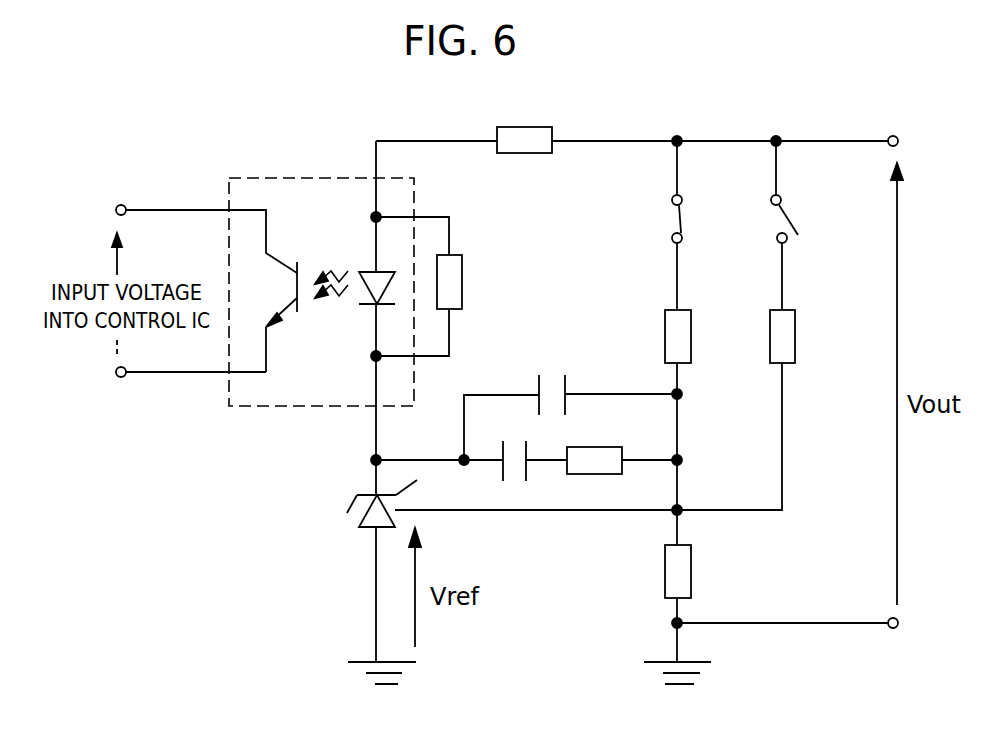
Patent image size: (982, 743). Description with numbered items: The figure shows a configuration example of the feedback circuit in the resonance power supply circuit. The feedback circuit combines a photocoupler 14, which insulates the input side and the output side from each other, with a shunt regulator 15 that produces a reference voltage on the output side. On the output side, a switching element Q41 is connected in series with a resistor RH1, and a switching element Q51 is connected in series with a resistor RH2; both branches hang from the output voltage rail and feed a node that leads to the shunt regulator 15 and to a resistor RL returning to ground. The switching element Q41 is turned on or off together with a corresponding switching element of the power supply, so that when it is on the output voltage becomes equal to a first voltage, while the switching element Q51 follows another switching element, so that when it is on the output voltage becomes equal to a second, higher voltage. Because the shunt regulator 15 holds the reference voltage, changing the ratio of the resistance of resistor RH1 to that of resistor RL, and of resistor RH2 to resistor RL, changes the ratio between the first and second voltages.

The photocoupler 14 is at (296, 177).
The shunt regulator 15 is at (340, 538).
The switching element Q41 is at (705, 225).
The switching element Q51 is at (808, 225).
The resistor RH1 is at (705, 352).
The resistor RH2 is at (819, 355).
The resistor RL is at (704, 584).